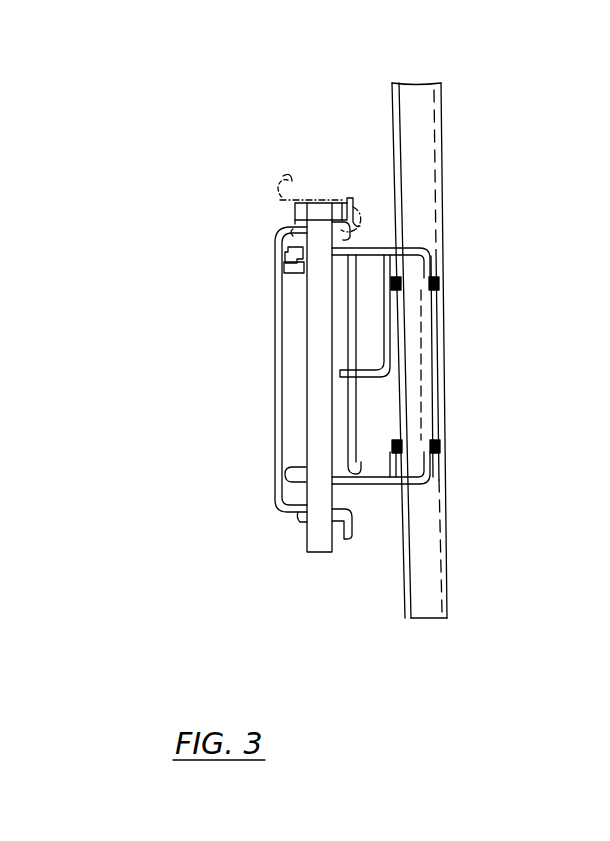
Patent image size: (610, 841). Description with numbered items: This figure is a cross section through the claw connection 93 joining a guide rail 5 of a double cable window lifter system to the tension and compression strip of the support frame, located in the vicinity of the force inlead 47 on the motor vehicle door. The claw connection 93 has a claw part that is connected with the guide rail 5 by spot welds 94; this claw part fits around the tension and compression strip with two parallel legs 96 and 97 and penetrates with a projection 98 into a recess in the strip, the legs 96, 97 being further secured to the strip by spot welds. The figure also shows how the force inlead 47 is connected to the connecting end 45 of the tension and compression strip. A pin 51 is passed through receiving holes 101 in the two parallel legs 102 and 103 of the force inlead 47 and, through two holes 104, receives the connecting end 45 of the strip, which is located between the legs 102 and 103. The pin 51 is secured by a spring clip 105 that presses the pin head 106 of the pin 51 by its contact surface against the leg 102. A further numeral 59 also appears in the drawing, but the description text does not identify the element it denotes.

The guide rail 5 is at (446, 547).
The connecting end 45 is at (290, 267).
The force inlead 47 is at (273, 338).
The pin 51 is at (322, 540).
The web 59 is at (370, 378).
The claw connection 93 is at (485, 218).
The spot welds 94 is at (440, 278).
The leg 96 is at (282, 233).
The leg 97 is at (279, 509).
The projection 98 is at (372, 378).
The receiving holes 101 is at (294, 206).
The leg 102 is at (294, 219).
The leg 103 is at (297, 510).
The holes 104 is at (290, 281).
The spring clip 105 is at (277, 182).
The pin head 106 is at (325, 210).